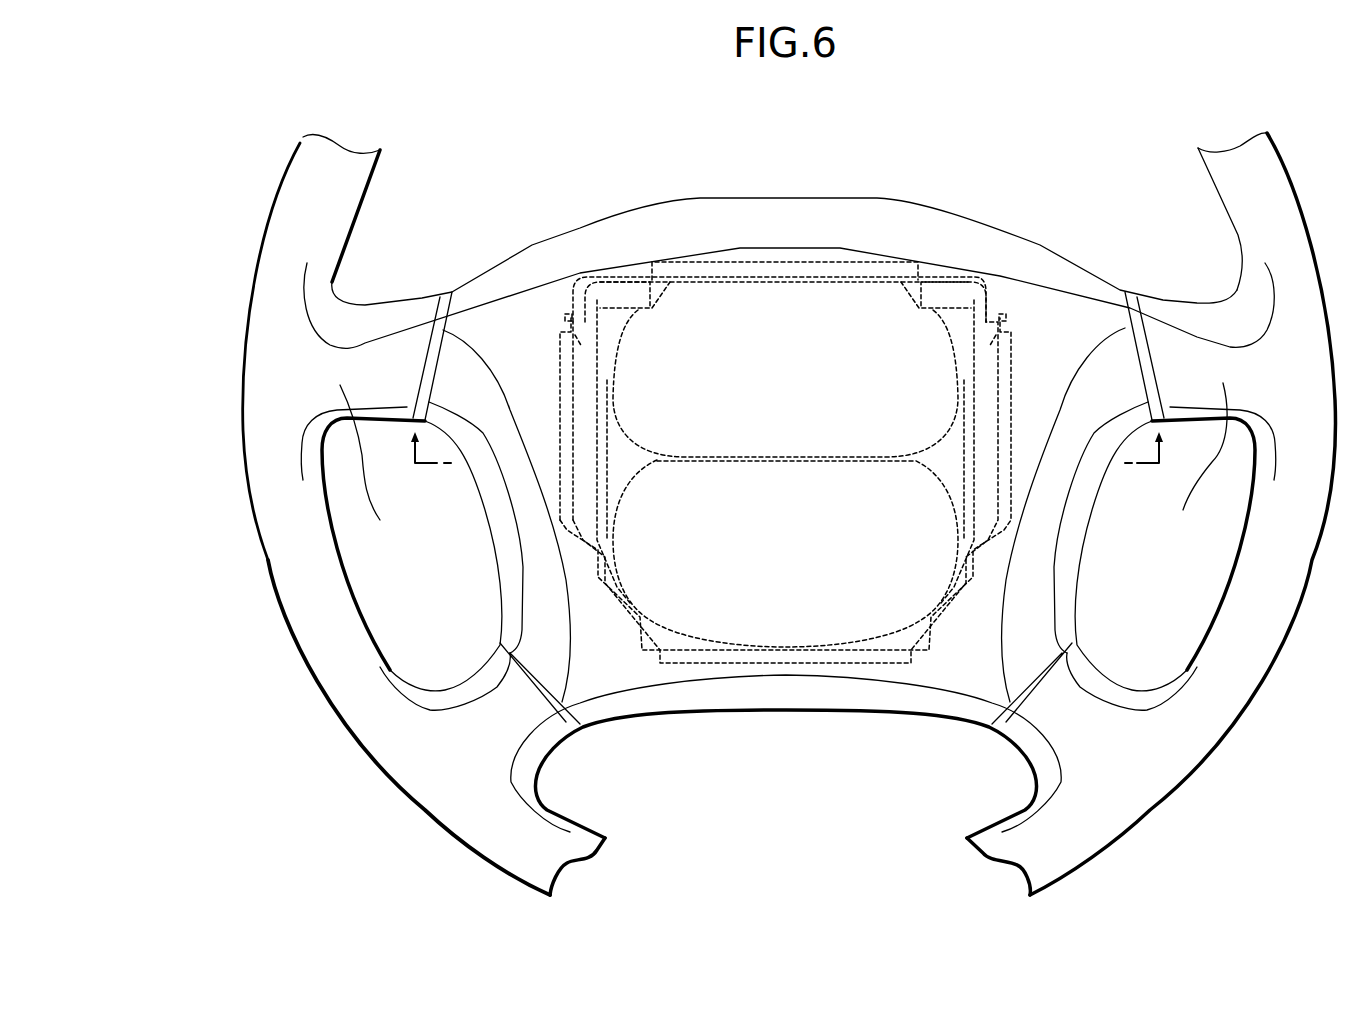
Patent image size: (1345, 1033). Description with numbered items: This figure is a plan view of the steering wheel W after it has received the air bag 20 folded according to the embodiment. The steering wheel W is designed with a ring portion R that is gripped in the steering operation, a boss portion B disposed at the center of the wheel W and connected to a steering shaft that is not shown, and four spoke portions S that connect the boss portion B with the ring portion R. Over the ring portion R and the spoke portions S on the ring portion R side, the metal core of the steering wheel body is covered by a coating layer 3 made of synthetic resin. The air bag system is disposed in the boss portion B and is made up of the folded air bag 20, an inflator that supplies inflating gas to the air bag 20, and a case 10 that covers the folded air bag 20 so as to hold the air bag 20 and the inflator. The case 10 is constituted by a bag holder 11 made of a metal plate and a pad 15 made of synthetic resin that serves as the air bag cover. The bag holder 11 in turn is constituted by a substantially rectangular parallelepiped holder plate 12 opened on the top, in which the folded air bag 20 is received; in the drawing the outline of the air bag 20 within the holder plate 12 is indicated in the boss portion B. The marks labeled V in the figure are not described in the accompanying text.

The steering wheel W is at (234, 168).
The boss portion B is at (958, 155).
The ring portion R is at (275, 258).
The coating layer 3 is at (262, 327).
The case 10 is at (567, 172).
The pad 15 is at (513, 347).
The bag holder 11 is at (568, 332).
The holder plate 12 is at (785, 472).
The air bag 20 is at (778, 305).
The viewing direction V is at (784, 447).
The spoke portions S is at (483, 720).